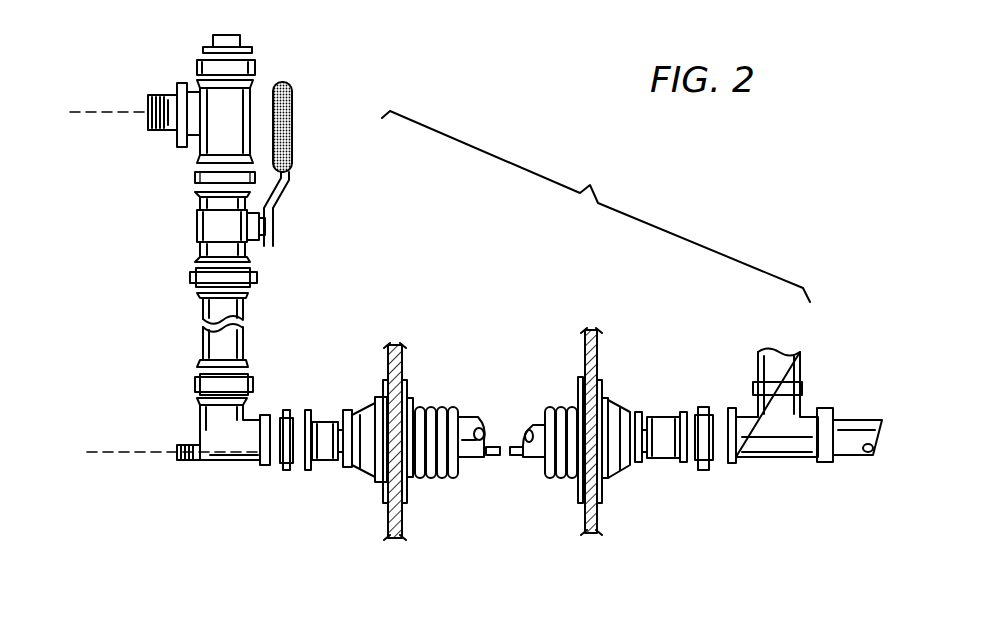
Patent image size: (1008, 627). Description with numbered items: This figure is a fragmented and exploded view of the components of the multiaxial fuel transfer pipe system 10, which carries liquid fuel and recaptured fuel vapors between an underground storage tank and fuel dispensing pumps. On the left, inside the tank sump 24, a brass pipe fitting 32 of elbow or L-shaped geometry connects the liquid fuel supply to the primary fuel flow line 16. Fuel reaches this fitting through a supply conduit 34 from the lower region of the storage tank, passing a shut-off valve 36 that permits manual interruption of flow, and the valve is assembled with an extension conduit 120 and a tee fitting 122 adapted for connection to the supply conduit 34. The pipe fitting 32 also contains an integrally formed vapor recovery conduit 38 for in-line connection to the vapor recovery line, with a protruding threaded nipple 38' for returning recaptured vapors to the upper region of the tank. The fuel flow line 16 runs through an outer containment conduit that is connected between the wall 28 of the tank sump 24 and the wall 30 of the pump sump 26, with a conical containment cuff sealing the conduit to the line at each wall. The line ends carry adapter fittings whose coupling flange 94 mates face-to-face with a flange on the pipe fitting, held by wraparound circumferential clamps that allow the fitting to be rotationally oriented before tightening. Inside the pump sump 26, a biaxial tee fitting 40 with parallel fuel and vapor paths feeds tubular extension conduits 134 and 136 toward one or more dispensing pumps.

The multiaxial fuel transfer pipe system 10 is at (596, 206).
The primary fuel flow line 16 is at (478, 425).
The tank sump 24 is at (297, 335).
The pump sump 26 is at (723, 496).
The tank sump wall 28 is at (385, 525).
The pump sump wall 30 is at (597, 522).
The biaxial pipe fitting 32 is at (178, 452).
The supply conduit 34 is at (97, 110).
The shut-off valve 36 is at (197, 223).
The vapor recovery conduit 38 is at (172, 492).
The threaded nipple 38' is at (139, 428).
The tee pipe fitting 40 is at (808, 428).
The coupling flange 94 is at (308, 410).
The extension conduit 120 is at (205, 343).
The tee fitting 122 is at (247, 100).
The tubular extension conduit 134 is at (800, 370).
The tubular extension conduit 136 is at (850, 458).